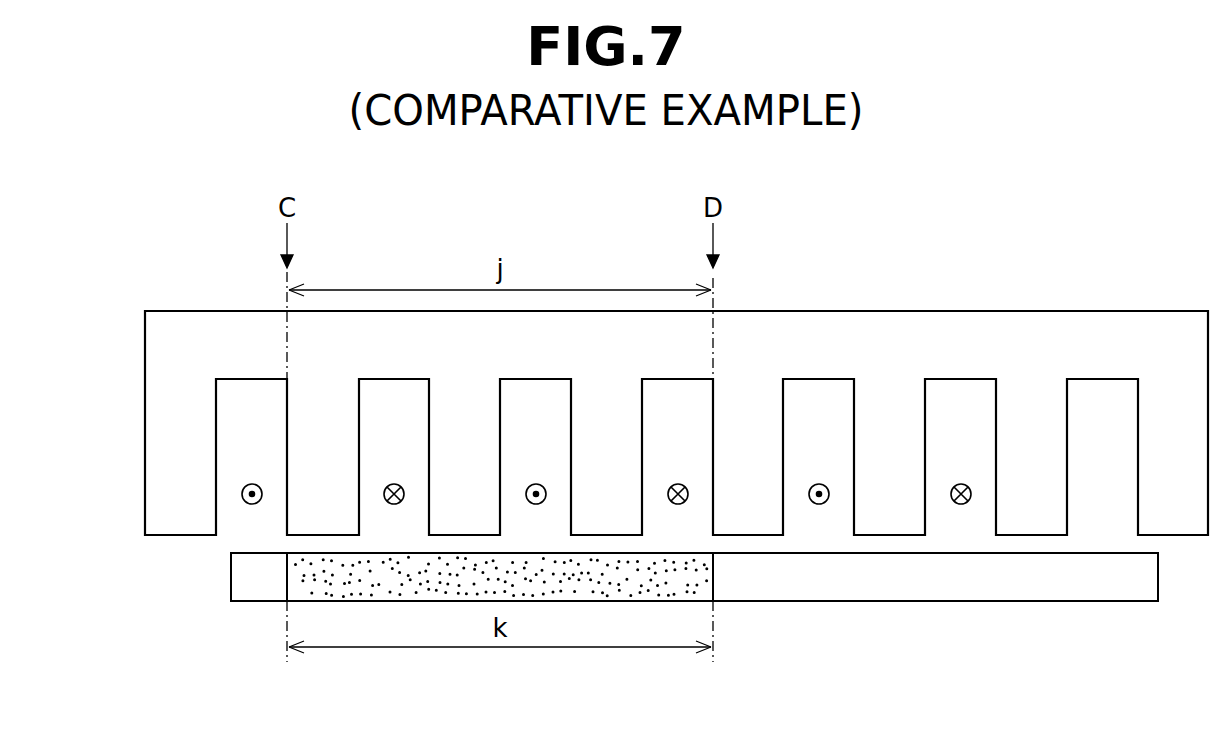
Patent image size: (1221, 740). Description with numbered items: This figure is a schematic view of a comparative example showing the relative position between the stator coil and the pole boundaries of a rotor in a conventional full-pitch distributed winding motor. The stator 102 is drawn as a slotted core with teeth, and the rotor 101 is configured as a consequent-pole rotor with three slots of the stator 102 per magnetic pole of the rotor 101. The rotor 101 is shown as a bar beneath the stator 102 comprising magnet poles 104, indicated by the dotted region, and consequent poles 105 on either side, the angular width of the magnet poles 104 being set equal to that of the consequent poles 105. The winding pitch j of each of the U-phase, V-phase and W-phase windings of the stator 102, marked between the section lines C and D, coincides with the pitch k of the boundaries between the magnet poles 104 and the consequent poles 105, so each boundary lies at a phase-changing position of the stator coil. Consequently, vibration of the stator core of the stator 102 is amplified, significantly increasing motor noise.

The rotor 101 is at (1100, 603).
The stator 102 is at (1008, 335).
The magnet poles 104 is at (302, 582).
The consequent poles 105 is at (252, 582).